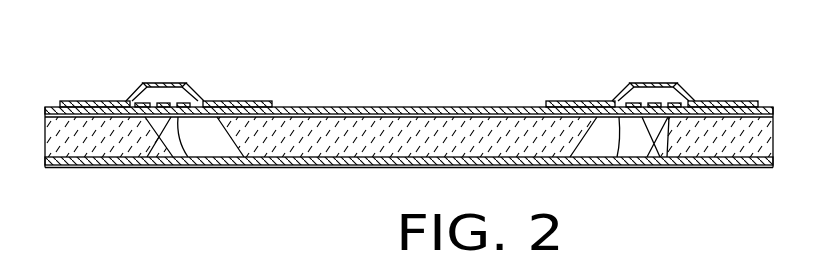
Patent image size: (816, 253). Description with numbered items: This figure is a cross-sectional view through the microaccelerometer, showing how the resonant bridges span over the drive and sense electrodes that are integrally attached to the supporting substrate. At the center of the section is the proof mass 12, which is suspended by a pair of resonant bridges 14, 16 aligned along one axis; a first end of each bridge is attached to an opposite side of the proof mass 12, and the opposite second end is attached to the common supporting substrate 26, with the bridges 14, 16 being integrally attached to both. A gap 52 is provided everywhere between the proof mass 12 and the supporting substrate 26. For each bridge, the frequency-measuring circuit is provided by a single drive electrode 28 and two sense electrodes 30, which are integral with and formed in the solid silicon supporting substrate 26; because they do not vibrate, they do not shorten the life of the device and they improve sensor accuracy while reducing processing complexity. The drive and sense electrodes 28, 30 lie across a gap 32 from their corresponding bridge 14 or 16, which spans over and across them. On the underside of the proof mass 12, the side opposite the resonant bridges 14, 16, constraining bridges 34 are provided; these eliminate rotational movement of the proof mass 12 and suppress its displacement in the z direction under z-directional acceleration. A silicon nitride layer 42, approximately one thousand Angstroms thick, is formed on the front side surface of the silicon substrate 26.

The proof mass 12 is at (462, 125).
The resonant bridge 14 is at (645, 83).
The resonant bridge 16 is at (158, 84).
The supporting substrate 26 is at (103, 147).
The drive electrode 28 is at (163, 104).
The sense electrodes 30 is at (173, 157).
The gap 32 is at (133, 93).
The constraining bridges 34 is at (197, 167).
The silicon nitride layer 42 is at (408, 110).
The gap 52 is at (213, 163).